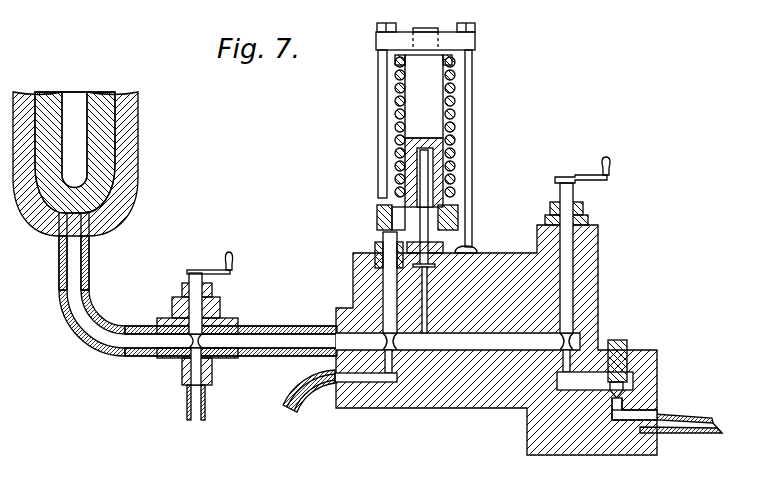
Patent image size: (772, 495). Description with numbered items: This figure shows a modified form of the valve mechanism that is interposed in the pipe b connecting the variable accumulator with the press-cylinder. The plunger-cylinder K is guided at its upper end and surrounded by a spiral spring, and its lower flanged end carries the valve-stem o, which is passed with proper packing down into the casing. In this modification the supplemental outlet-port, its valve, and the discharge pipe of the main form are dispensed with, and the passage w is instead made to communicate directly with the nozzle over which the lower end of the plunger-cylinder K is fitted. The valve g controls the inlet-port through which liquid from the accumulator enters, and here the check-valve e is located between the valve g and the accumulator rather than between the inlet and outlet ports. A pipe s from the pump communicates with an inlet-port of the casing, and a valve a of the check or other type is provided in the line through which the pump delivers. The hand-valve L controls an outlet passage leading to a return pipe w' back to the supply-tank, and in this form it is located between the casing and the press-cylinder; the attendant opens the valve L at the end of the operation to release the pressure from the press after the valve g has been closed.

The plunger-cylinder K is at (426, 138).
The hand-valve L is at (197, 315).
The outlet tube w' is at (207, 402).
The pipe b is at (390, 334).
The valve-stem o is at (385, 295).
The passage w is at (454, 241).
The valve a is at (458, 342).
The pipe s is at (340, 381).
The valve g is at (567, 305).
The check-valve e is at (627, 383).